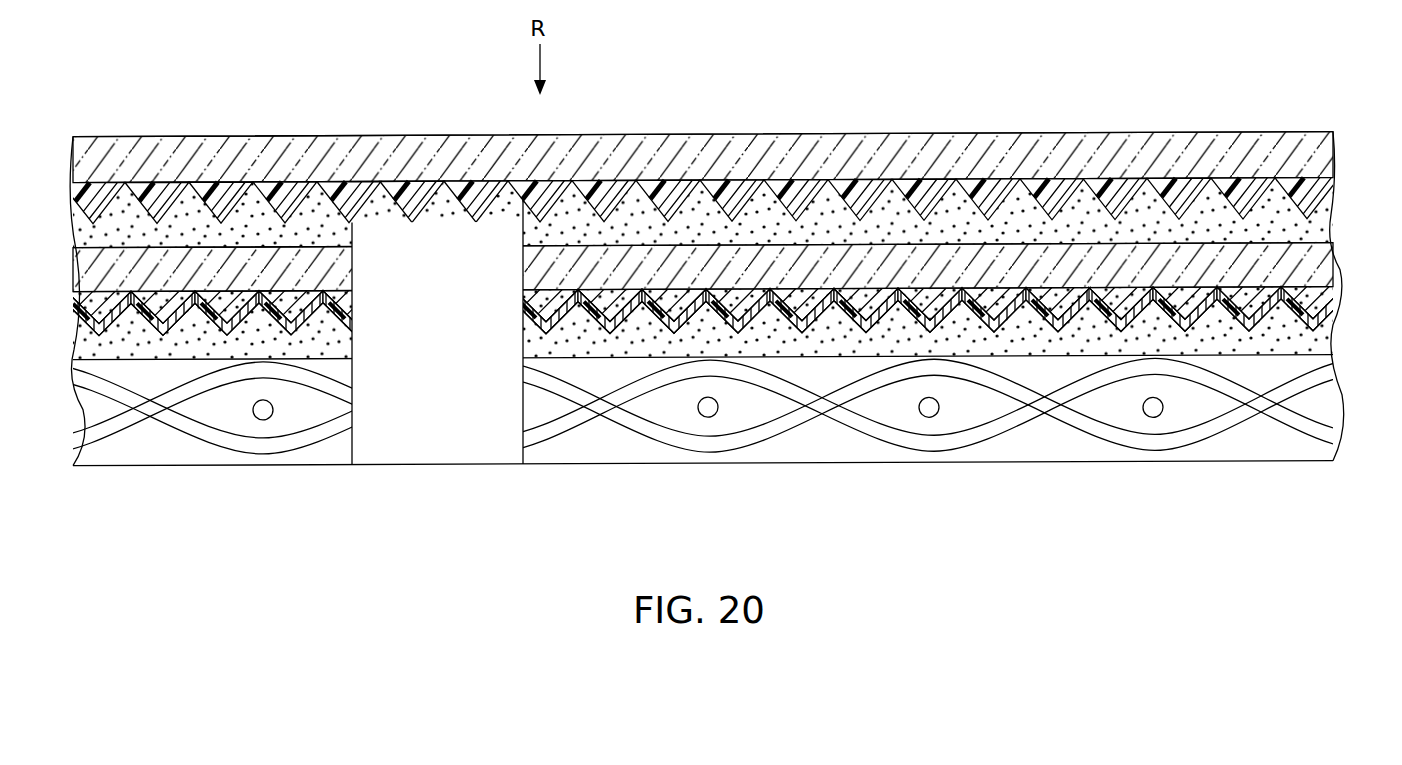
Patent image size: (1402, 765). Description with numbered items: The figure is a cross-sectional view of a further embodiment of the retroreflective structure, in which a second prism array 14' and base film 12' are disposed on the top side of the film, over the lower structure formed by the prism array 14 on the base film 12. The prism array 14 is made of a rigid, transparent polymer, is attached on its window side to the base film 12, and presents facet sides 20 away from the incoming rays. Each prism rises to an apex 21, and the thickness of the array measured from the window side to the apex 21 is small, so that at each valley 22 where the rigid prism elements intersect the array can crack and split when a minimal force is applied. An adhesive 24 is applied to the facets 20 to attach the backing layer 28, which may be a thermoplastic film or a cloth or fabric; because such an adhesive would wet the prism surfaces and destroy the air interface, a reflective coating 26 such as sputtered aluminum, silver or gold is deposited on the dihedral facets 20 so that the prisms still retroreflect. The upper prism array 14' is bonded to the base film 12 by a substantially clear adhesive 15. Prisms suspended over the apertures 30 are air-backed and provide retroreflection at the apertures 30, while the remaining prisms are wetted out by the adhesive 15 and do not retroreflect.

The base film 12 is at (731, 266).
The base film 12' is at (703, 139).
The prism array 14 is at (706, 216).
The prism array 14' is at (700, 161).
The adhesive 15 is at (1017, 185).
The facet sides 20 is at (1043, 308).
The apex 21 is at (1253, 322).
The valley 22 is at (1152, 300).
The adhesive 24 is at (1336, 337).
The reflective coating 26 is at (523, 330).
The backing layer 28 is at (151, 466).
The apertures 30 is at (385, 264).